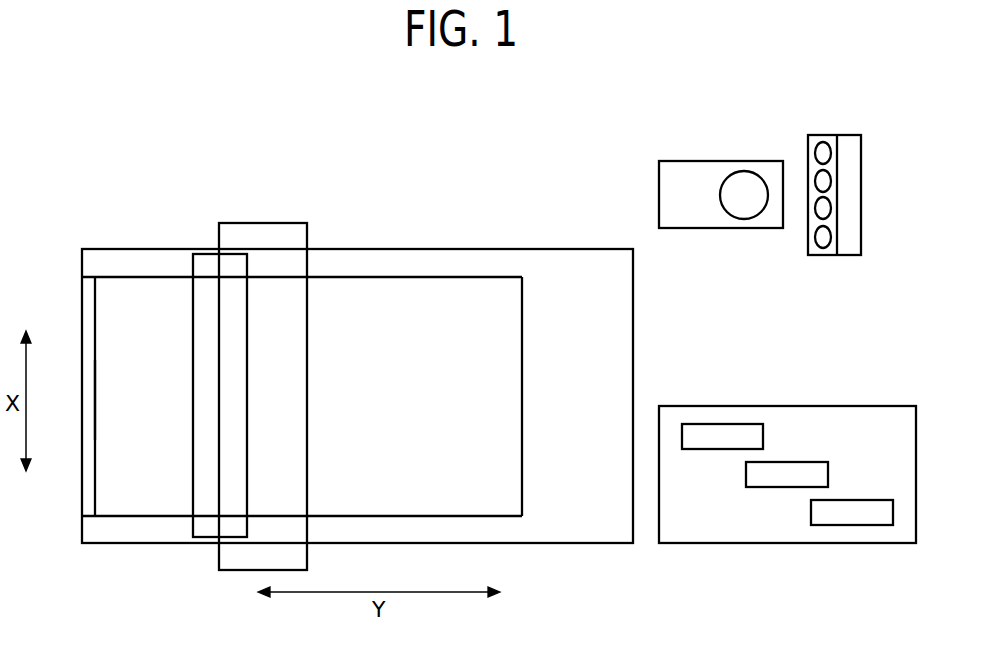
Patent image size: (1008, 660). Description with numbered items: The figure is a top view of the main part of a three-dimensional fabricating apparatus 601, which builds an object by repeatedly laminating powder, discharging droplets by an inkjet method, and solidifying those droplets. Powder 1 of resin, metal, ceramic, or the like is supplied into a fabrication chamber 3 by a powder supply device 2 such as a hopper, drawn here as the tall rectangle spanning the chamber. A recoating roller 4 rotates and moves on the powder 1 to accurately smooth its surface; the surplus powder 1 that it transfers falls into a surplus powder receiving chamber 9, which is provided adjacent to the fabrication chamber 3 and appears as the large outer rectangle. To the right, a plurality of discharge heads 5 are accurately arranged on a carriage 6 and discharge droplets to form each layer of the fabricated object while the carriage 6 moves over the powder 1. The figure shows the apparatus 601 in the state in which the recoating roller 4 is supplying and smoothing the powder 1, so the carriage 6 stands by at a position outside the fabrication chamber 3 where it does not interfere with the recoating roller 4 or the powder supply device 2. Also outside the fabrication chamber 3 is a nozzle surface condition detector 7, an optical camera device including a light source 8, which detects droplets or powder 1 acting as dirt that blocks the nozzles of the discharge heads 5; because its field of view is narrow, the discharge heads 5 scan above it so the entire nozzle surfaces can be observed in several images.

The three-dimensional fabricating apparatus 601 is at (292, 126).
The powder 1 is at (107, 334).
The powder supply device 2 is at (262, 222).
The fabrication chamber 3 is at (95, 400).
The recoating roller 4 is at (203, 262).
The discharge heads 5 is at (697, 449).
The carriage 6 is at (811, 406).
The nozzle surface condition detector 7 is at (690, 161).
The light source 8 is at (845, 135).
The surplus powder receiving chamber 9 is at (577, 520).